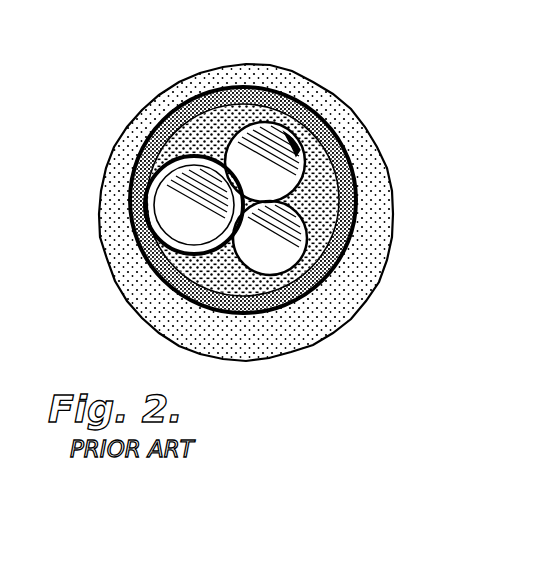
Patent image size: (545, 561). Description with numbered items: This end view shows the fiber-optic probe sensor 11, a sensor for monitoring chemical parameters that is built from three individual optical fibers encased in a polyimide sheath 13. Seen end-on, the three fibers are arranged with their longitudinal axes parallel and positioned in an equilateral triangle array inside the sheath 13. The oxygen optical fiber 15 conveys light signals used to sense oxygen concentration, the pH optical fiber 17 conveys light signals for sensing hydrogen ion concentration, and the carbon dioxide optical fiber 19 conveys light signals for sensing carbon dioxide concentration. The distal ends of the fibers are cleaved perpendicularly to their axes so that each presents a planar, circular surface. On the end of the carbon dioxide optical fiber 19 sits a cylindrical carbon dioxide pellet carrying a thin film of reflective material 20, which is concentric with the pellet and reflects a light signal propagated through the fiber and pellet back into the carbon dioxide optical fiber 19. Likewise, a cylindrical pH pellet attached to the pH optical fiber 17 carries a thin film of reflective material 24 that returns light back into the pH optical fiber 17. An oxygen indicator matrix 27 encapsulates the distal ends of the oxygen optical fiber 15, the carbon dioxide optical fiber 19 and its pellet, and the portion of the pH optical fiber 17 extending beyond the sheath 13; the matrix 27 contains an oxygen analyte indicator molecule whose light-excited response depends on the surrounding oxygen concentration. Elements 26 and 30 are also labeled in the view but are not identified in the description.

The fiber-optic probe sensor 11 is at (430, 96).
The polyimide sheath 13 is at (356, 208).
The oxygen optical fiber 15 is at (357, 141).
The pH optical fiber 17 is at (130, 208).
The carbon dioxide optical fiber 19 is at (303, 284).
The thin film of reflective material 20 is at (352, 248).
The thin film of reflective material 24 is at (136, 224).
The conductor 26 is at (108, 262).
The oxygen indicator matrix 27 is at (297, 82).
The binder 30 is at (340, 263).